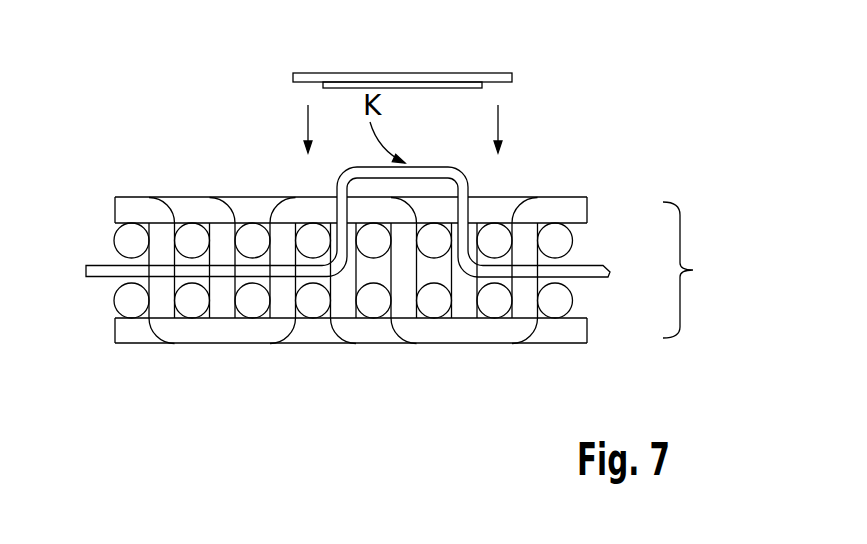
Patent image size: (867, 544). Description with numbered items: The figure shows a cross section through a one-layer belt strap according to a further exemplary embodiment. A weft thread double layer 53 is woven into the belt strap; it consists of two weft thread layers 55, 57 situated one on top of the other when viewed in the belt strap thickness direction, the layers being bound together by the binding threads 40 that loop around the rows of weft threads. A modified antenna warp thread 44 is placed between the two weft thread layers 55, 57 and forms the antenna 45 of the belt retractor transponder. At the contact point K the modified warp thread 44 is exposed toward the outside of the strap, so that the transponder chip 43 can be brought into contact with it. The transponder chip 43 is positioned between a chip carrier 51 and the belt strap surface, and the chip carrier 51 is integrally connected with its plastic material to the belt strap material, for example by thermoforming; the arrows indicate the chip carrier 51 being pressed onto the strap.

The weft threads / binding yarns 40 is at (132, 210).
The transponder chip 43 is at (433, 88).
The modified antenna warp thread 44 is at (95, 267).
The antenna 45 is at (537, 197).
The chip carrier 51 is at (400, 72).
The weft thread double layer 53 is at (695, 270).
The weft thread layer 55 is at (587, 243).
The weft thread layer 57 is at (587, 302).